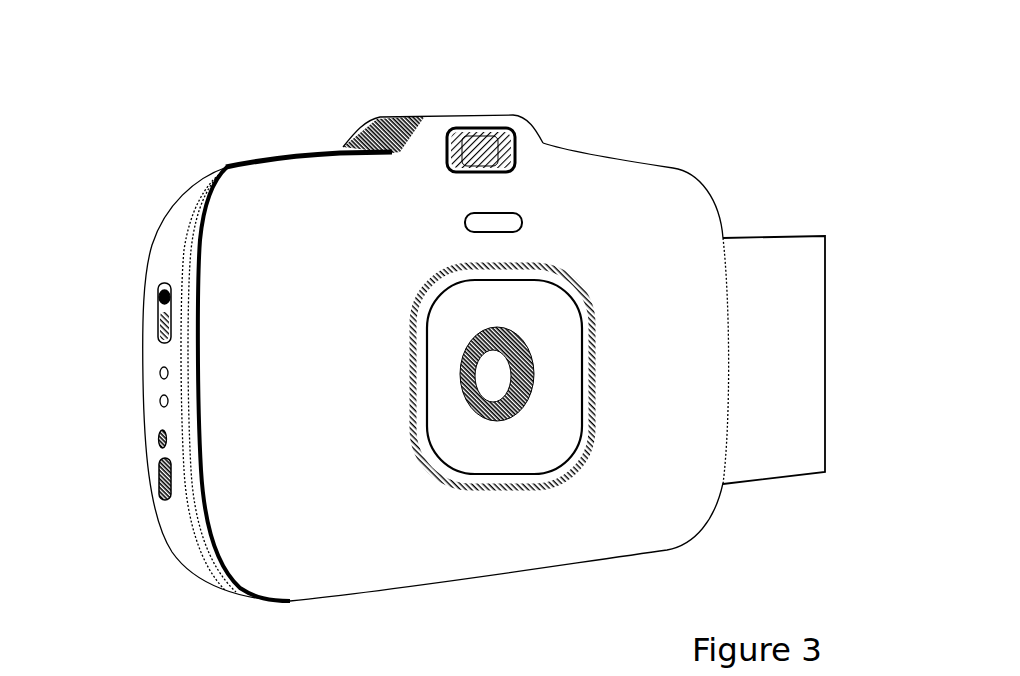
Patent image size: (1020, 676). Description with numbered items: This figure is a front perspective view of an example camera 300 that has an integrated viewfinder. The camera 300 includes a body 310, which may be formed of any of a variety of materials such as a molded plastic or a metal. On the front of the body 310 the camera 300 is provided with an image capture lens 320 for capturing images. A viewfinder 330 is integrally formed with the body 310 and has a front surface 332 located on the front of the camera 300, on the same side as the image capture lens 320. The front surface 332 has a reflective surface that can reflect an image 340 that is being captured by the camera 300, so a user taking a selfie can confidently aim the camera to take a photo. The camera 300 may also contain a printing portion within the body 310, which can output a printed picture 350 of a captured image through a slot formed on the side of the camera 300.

The example camera 300 is at (150, 140).
The body 310 is at (670, 515).
The image capture lens 320 is at (490, 383).
The viewfinder 330 is at (527, 148).
The front surface 332 is at (450, 132).
The image 340 is at (493, 131).
The printed picture 350 is at (782, 455).